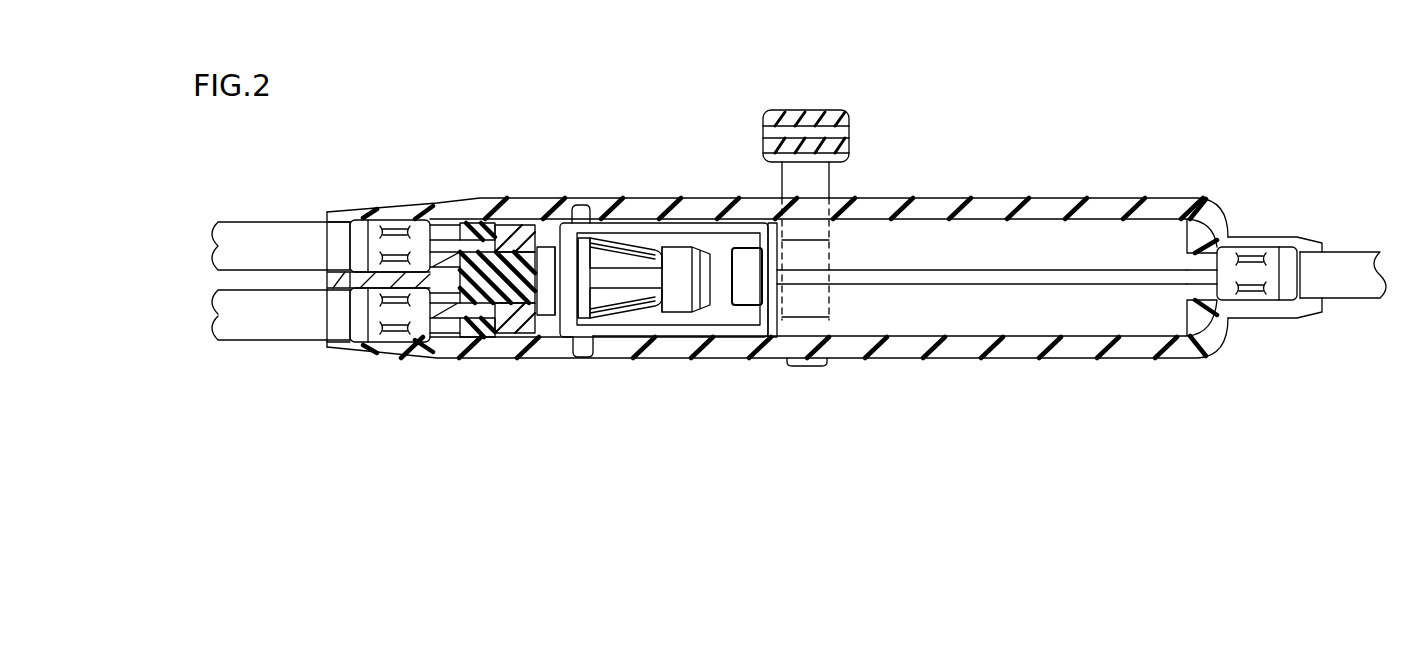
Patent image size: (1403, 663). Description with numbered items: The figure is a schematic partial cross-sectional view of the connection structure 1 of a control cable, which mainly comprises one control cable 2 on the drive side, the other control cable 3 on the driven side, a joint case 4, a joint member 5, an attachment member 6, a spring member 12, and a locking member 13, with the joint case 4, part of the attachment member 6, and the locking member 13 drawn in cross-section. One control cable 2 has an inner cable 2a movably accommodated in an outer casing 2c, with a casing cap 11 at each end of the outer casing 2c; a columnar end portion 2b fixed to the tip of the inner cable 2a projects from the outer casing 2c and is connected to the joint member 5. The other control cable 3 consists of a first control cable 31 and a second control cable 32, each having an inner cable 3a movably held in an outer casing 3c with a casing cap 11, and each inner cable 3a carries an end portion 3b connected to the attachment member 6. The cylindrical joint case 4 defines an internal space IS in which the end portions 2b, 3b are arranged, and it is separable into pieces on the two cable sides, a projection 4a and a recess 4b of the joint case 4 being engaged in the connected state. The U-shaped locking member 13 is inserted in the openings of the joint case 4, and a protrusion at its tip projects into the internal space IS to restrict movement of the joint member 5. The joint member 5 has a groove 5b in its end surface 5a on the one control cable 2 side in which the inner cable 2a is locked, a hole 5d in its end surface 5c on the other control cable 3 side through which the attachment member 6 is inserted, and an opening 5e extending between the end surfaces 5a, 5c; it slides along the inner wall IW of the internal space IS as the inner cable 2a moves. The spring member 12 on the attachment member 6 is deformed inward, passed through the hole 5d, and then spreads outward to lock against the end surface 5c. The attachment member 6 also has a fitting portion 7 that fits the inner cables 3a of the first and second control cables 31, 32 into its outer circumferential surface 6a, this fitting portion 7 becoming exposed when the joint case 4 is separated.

The connection structure 1 is at (1304, 152).
The one control cable 2 is at (1343, 273).
The inner cable 2a is at (912, 278).
The end portion 2b is at (747, 263).
The outer casing 2c is at (1343, 287).
The other control cable 3 is at (754, 280).
The first control cable 31 is at (256, 240).
The second control cable 32 is at (296, 305).
The inner cable 3a is at (447, 247).
The end portion 3b is at (518, 248).
The outer casing 3c is at (318, 228).
The joint case 4 is at (1048, 212).
The projection 4a is at (640, 345).
The recess 4b is at (577, 335).
The joint member 5 is at (670, 282).
The end surface 5a is at (757, 295).
The groove 5b is at (772, 303).
The end surface 5c is at (578, 283).
The hole 5d is at (628, 335).
The opening 5e is at (699, 318).
The attachment member 6 is at (547, 298).
The outer circumferential surface 6a is at (475, 237).
The fitting portion 7 is at (480, 232).
The casing cap 11 is at (400, 235).
The spring member 12 is at (673, 263).
The locking member 13 is at (810, 184).
The internal space IS is at (583, 212).
The inner wall IW is at (963, 222).